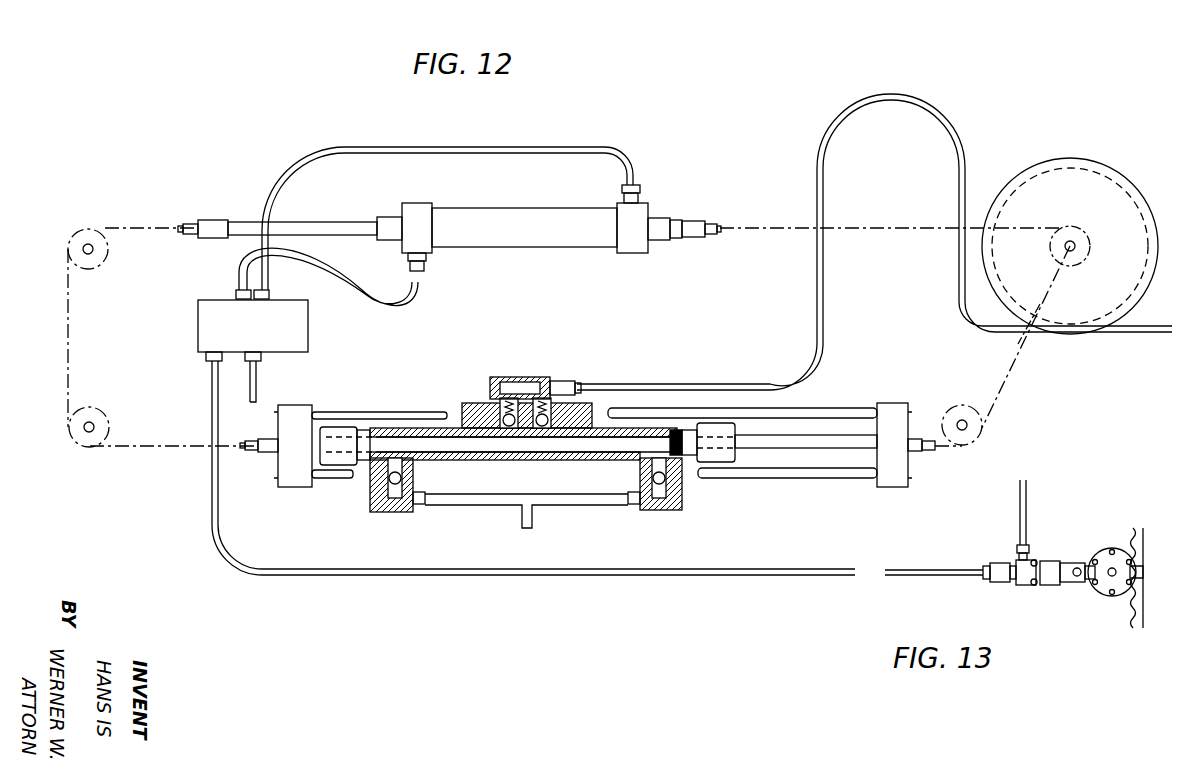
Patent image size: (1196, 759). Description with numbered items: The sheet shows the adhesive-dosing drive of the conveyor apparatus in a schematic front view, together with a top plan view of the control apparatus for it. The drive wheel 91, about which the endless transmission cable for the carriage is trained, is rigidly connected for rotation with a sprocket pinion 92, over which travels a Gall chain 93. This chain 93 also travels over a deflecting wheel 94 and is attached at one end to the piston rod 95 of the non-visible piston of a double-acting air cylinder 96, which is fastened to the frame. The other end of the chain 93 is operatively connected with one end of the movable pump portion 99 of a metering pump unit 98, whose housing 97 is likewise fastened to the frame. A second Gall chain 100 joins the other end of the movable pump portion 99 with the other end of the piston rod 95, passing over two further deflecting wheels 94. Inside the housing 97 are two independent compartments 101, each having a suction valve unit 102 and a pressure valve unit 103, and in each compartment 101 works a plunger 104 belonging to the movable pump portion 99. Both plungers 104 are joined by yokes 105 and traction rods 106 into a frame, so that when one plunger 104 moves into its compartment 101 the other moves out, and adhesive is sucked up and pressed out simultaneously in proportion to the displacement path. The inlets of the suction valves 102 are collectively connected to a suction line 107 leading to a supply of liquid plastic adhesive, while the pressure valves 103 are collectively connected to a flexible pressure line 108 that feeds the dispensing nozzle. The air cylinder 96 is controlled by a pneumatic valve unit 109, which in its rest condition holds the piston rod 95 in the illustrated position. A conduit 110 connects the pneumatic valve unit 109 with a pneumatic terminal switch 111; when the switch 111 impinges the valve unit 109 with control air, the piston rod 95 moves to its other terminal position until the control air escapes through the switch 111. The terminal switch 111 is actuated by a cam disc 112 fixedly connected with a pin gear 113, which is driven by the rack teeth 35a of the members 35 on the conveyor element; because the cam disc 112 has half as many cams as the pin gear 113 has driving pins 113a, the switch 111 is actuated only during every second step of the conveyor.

In FIG. 12, the drive wheel 91 is at (1036, 191).
In FIG. 12, the sprocket pinion 92 is at (1083, 240).
In FIG. 12, the Gall chain 93 is at (1008, 386).
In FIG. 12, the deflecting wheel 94 is at (90, 236).
In FIG. 12, the piston rod 95 is at (358, 227).
In FIG. 12, the double-acting air cylinder 96 is at (545, 218).
In FIG. 12, the housing 97 is at (470, 407).
In FIG. 12, the metering pump unit 98 is at (582, 398).
In FIG. 12, the movable pump portion 99 is at (809, 480).
In FIG. 12, the Gall chain 100 is at (155, 452).
In FIG. 12, the compartment 101 is at (408, 437).
In FIG. 12, the suction valve unit 102 is at (398, 506).
In FIG. 12, the pressure valve unit 103 is at (497, 377).
In FIG. 12, the plunger 104 is at (466, 446).
In FIG. 12, the yoke 105 is at (288, 478).
In FIG. 12, the traction rod 106 is at (336, 414).
In FIG. 12, the suction line 107 is at (529, 514).
In FIG. 12, the flexible pressure line 108 is at (622, 386).
In FIG. 12, the pneumatic valve unit 109 is at (214, 316).
In FIG. 12, the conduit 110 is at (263, 577).
In FIG. 13, the conduit 110 is at (923, 572).
In FIG. 13, the pneumatic terminal switch 111 is at (1053, 560).
In FIG. 13, the cam disc 112 is at (1099, 560).
In FIG. 13, the pin gear 113 is at (1104, 586).
In FIG. 13, the driving pin 113a is at (1136, 572).
In FIG. 13, the member 35 is at (1143, 540).
In FIG. 13, the rack teeth 35a is at (1134, 632).